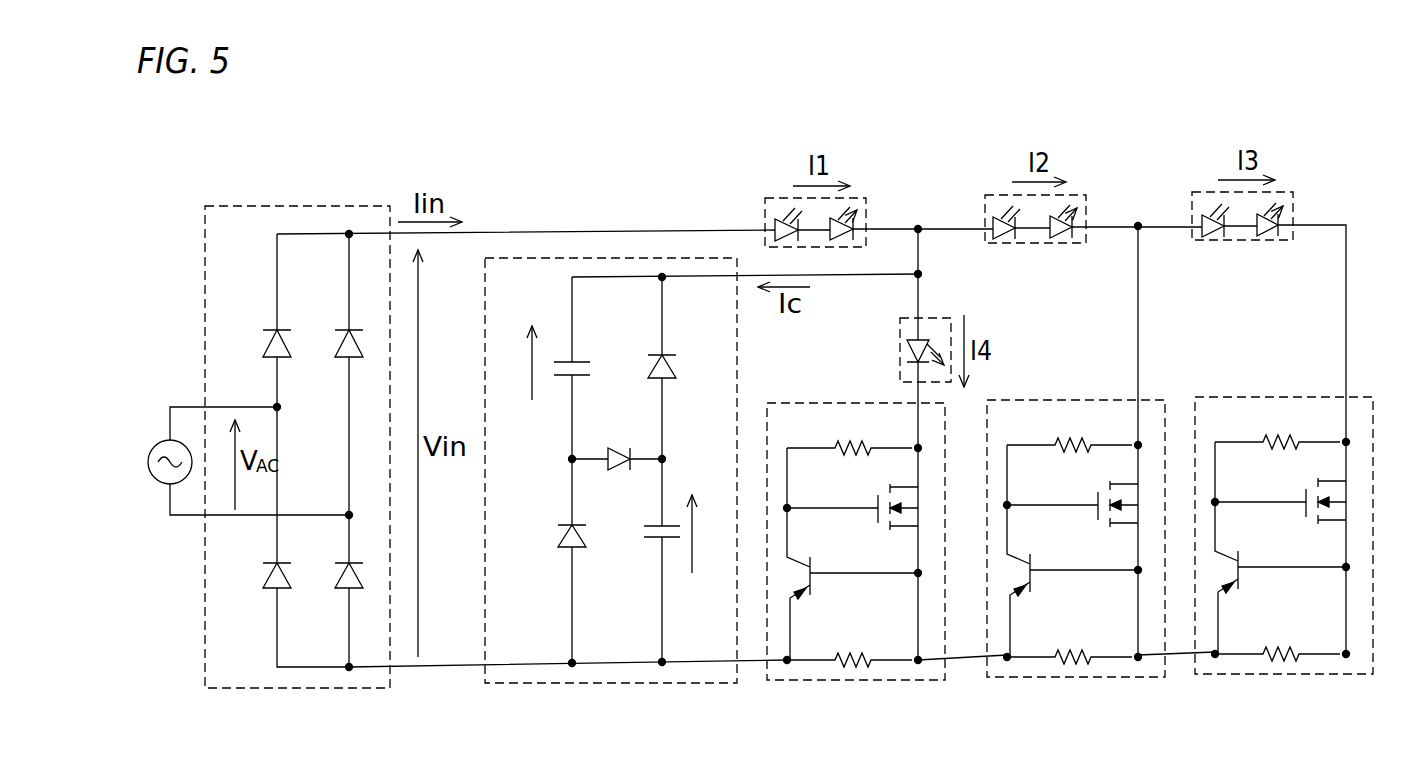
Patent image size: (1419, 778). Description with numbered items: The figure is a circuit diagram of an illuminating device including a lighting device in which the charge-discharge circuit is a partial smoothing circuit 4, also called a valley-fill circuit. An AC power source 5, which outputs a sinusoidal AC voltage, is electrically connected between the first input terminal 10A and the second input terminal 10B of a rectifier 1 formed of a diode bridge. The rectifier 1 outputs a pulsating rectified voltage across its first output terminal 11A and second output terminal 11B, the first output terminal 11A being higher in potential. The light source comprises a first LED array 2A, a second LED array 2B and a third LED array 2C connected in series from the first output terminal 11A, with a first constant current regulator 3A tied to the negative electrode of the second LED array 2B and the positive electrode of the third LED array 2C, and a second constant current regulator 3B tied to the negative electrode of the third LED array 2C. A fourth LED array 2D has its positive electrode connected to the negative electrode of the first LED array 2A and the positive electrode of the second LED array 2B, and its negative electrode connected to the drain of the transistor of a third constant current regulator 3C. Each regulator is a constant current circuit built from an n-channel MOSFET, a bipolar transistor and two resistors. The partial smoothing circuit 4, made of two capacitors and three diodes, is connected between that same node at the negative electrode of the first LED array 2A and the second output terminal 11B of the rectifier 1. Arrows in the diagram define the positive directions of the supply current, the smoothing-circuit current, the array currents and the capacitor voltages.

The rectifier 1 is at (274, 202).
The AC power source 5 is at (153, 447).
The first input terminal 10A is at (275, 405).
The second input terminal 10B is at (348, 512).
The first output terminal 11A is at (345, 238).
The second output terminal 11B is at (348, 665).
The first LED array 2A is at (775, 193).
The second LED array 2B is at (990, 193).
The third LED array 2C is at (1203, 188).
The fourth LED array 2D is at (939, 313).
The first constant current regulator 3A is at (1099, 682).
The second constant current regulator 3B is at (1308, 678).
The third constant current regulator 3C is at (881, 685).
The partial smoothing circuit 4 is at (661, 688).